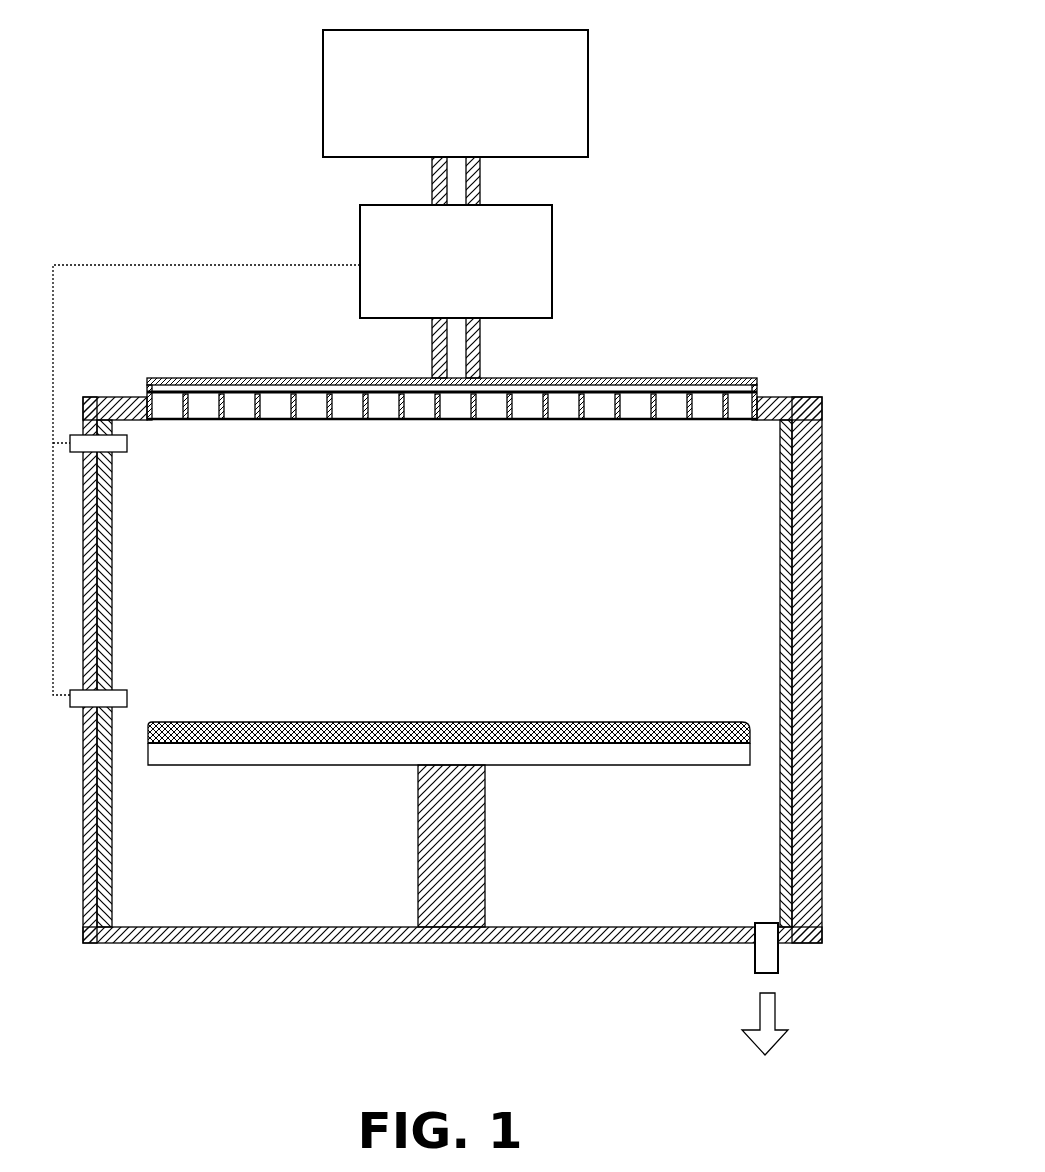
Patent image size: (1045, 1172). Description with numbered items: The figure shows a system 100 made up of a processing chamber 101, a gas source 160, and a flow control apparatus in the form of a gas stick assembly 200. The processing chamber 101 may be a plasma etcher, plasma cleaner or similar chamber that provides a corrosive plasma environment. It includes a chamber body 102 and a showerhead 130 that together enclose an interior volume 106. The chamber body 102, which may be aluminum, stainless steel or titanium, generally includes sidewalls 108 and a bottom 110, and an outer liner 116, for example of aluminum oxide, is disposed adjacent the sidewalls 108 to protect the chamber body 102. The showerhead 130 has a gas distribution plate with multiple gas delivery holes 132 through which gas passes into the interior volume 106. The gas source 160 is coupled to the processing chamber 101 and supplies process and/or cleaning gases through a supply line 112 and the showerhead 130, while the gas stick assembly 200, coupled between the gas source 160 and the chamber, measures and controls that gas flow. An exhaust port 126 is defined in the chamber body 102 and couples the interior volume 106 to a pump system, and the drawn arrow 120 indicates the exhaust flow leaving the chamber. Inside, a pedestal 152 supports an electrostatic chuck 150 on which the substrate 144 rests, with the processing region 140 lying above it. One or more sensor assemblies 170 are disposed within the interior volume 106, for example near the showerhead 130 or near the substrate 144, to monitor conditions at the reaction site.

The system 100 is at (800, 80).
The processing chamber 101 is at (803, 378).
The chamber body 102 is at (843, 513).
The interior volume 106 is at (678, 499).
The sidewalls 108 is at (822, 620).
The bottom 110 is at (197, 943).
The supply line 112 is at (426, 337).
The outer liner 116 is at (780, 570).
The exhaust flow 120 is at (765, 1038).
The exhaust port 126 is at (752, 951).
The showerhead 130 is at (452, 374).
The gas delivery holes 132 is at (232, 394).
The processing region 140 is at (356, 852).
The substrate 144 is at (470, 722).
The electrostatic chuck 150 is at (195, 766).
The pedestal 152 is at (487, 846).
The gas source 160 is at (455, 93).
The sensor assemblies 170 is at (134, 447).
The gas stick assembly 200 is at (302, 450).